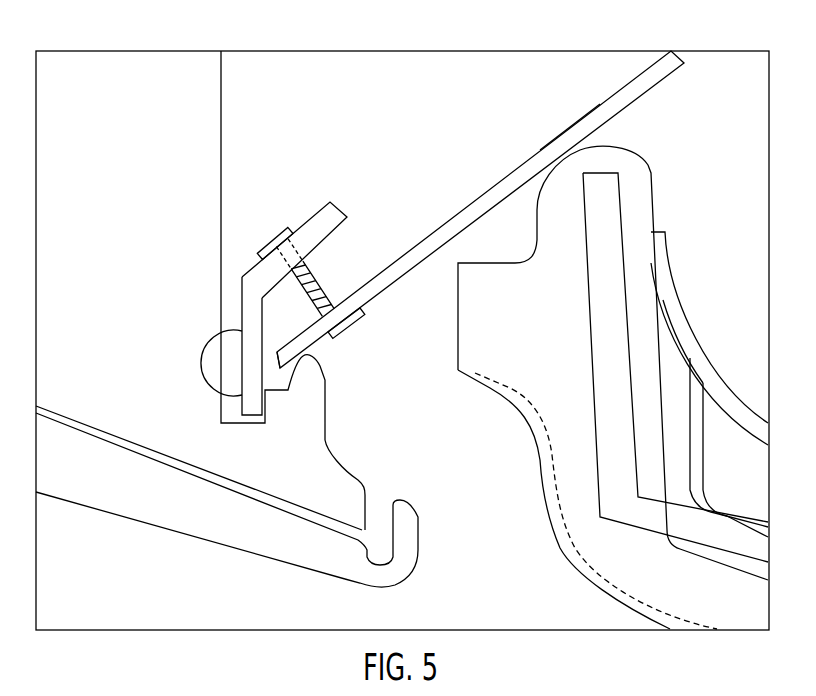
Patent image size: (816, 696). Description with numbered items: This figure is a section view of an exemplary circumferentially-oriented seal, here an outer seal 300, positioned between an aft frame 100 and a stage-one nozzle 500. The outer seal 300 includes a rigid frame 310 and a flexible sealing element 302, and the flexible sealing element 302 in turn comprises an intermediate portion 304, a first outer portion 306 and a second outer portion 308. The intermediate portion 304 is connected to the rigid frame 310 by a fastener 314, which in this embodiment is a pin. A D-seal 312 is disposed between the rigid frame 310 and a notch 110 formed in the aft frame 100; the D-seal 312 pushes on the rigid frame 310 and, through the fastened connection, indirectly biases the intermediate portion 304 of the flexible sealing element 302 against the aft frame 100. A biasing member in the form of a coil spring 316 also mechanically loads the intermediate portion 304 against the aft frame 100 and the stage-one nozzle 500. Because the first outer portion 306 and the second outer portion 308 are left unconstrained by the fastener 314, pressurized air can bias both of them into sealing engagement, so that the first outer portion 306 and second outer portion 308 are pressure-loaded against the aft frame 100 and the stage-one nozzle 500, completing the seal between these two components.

The aft frame 100 is at (260, 553).
The notch 110 is at (230, 423).
The outer seal 300 is at (210, 372).
The flexible sealing element 302 is at (484, 163).
The intermediate portion 304 is at (347, 323).
The first outer portion 306 is at (307, 350).
The second outer portion 308 is at (567, 143).
The rigid frame 310 is at (334, 212).
The D-seal 312 is at (222, 335).
The fastener 314 is at (280, 232).
The coil spring 316 is at (327, 290).
The stage-one nozzle 500 is at (638, 200).